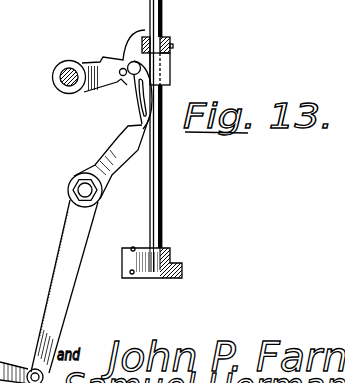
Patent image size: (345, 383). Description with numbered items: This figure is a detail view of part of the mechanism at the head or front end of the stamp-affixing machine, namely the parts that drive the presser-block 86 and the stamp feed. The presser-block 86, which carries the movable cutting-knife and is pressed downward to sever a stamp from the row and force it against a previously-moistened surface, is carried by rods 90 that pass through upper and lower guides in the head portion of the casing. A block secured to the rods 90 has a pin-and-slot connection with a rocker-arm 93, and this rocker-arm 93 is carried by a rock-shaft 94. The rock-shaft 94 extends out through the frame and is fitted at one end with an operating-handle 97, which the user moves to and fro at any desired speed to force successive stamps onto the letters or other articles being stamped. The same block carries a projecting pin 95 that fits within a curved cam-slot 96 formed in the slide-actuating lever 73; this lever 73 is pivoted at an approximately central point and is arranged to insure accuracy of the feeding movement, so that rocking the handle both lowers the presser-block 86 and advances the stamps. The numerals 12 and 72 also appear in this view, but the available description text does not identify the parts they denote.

The frame 12 is at (140, 0).
The arm 72 is at (13, 364).
The slide-actuating lever 73 is at (127, 130).
The presser-block 86 is at (143, 263).
The rods 90 is at (158, 177).
The rocker-arm 93 is at (103, 62).
The rock-shaft 94 is at (62, 86).
The projecting pin 95 is at (145, 30).
The curved cam-slot 96 is at (142, 104).
The operating-handle 97 is at (276, 5).